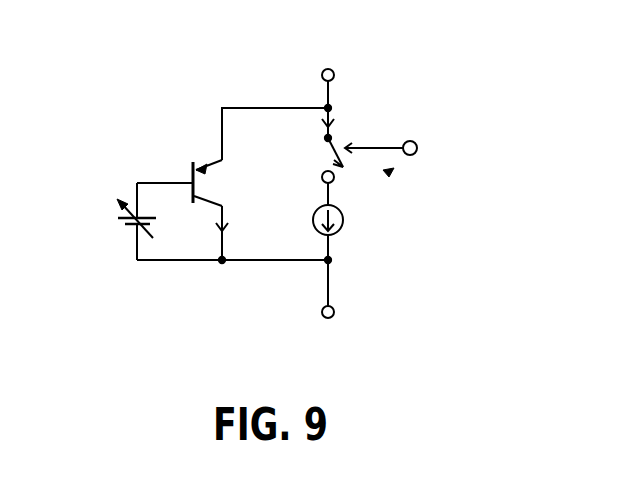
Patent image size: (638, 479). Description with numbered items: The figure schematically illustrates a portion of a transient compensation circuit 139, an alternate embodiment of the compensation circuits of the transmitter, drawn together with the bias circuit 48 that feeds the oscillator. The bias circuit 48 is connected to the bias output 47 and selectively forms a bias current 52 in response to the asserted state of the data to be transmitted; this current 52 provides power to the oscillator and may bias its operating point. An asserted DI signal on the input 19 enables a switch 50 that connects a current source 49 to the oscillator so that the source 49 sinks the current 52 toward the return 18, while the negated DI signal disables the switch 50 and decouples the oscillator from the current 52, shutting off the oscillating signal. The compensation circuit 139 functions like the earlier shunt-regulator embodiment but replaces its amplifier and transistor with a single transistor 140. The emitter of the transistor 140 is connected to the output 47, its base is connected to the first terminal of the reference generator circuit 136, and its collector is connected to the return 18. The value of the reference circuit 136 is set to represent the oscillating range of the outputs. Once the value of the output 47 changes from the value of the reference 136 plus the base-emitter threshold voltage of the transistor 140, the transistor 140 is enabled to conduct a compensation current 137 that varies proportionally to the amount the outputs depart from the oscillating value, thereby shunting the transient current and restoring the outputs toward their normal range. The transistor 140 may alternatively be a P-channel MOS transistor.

The return 18 is at (334, 314).
The input 19 is at (415, 142).
The bias output 47 is at (333, 70).
The bias circuit 48 is at (390, 173).
The current source 49 is at (343, 222).
The switch 50 is at (320, 157).
The bias current 52 is at (336, 116).
The reference generator circuit 136 is at (122, 227).
The current 137 is at (227, 233).
The transient compensation circuit 139 is at (187, 319).
The transistor 140 is at (214, 185).